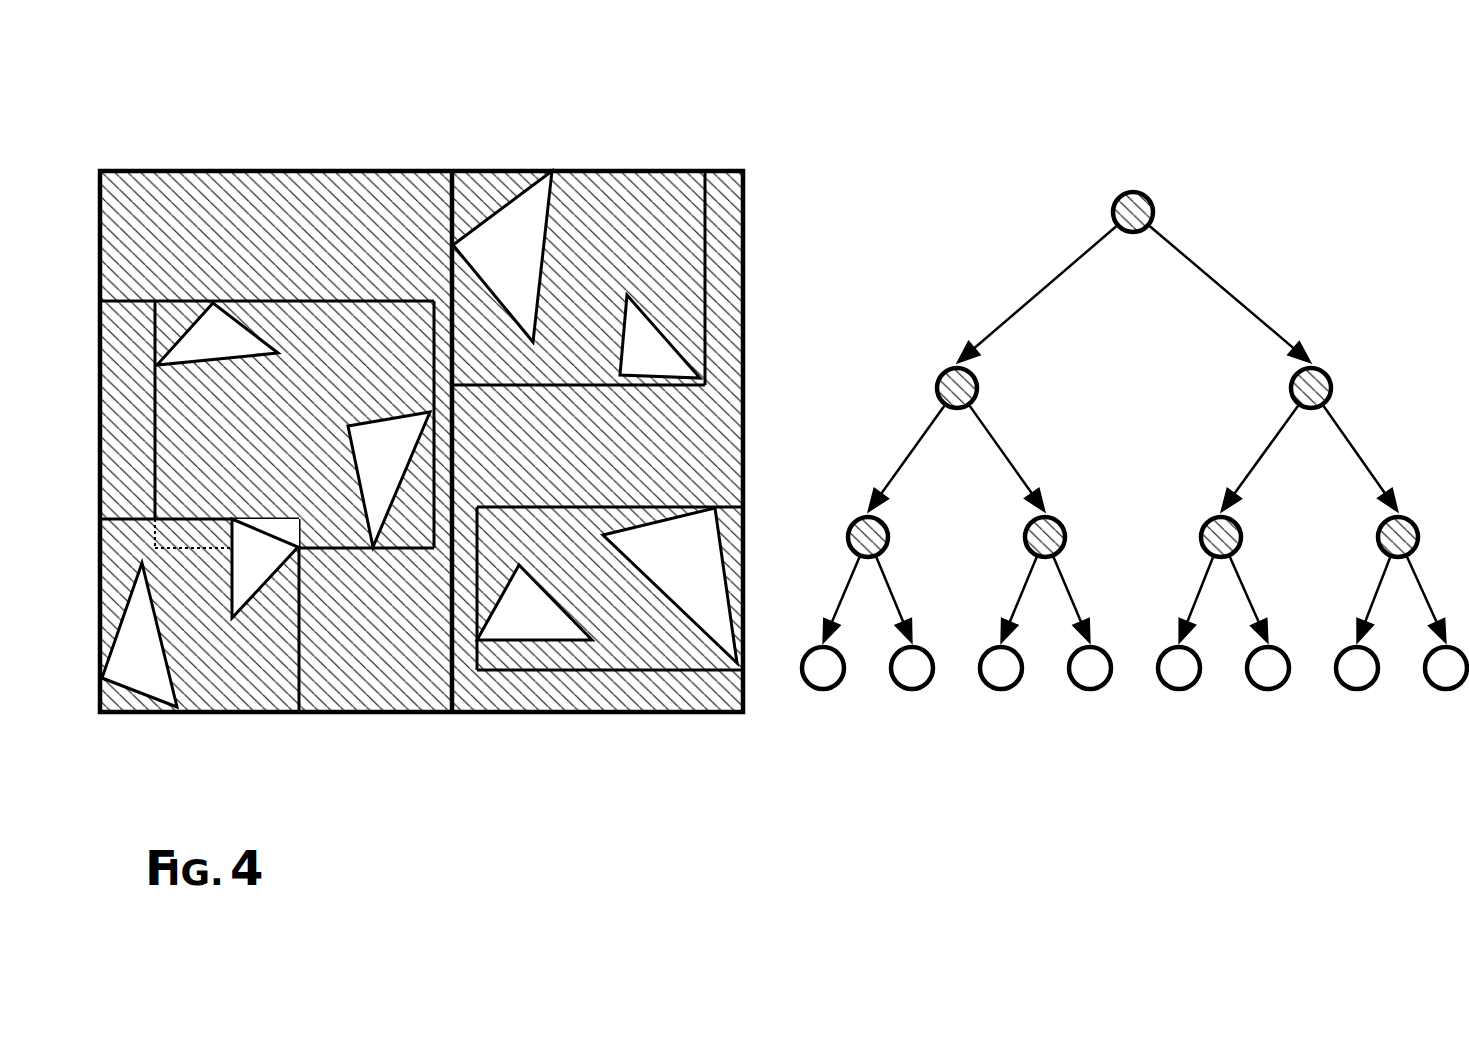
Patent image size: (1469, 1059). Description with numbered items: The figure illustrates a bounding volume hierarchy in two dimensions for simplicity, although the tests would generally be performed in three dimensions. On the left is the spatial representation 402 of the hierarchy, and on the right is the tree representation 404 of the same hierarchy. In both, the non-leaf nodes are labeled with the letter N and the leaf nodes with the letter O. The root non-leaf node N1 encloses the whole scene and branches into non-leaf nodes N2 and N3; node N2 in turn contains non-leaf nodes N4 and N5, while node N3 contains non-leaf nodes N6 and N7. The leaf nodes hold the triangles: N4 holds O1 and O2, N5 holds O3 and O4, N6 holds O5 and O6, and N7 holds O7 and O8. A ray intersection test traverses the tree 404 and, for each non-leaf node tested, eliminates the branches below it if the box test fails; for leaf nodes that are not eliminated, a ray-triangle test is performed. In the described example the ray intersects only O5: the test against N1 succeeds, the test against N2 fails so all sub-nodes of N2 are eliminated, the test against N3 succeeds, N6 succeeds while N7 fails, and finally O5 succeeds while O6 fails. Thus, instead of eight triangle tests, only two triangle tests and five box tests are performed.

The spatial representation 402 is at (333, 120).
The tree representation 404 is at (908, 120).
The non-leaf node N1 is at (276, 441).
The non-leaf node N2 is at (366, 630).
The non-leaf node N3 is at (597, 441).
The non-leaf node N4 is at (199, 615).
The non-leaf node N5 is at (294, 424).
The non-leaf node N6 is at (578, 278).
The non-leaf node N7 is at (609, 588).
The leaf node O1 is at (139, 635).
The leaf node O2 is at (265, 568).
The leaf node O3 is at (389, 479).
The leaf node O4 is at (217, 334).
The leaf node O5 is at (502, 256).
The leaf node O6 is at (660, 336).
The leaf node O7 is at (534, 602).
The leaf node O8 is at (670, 585).